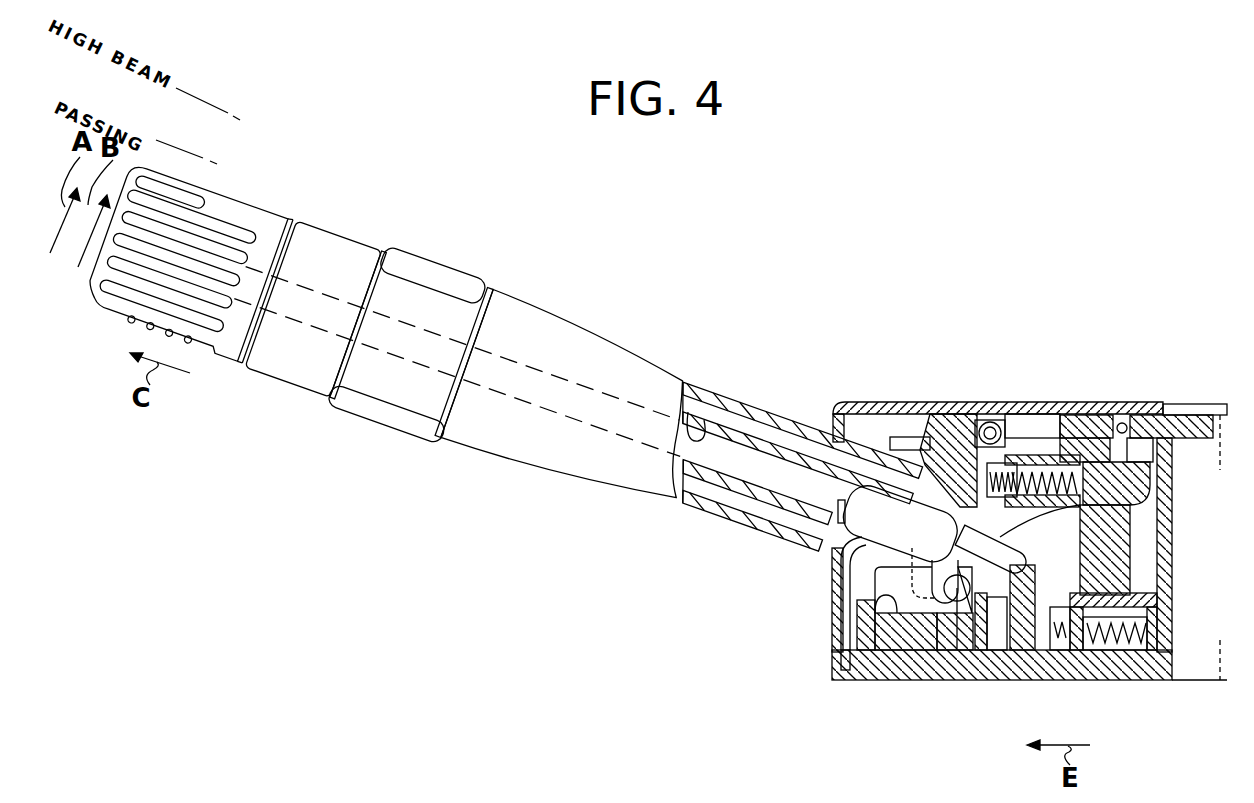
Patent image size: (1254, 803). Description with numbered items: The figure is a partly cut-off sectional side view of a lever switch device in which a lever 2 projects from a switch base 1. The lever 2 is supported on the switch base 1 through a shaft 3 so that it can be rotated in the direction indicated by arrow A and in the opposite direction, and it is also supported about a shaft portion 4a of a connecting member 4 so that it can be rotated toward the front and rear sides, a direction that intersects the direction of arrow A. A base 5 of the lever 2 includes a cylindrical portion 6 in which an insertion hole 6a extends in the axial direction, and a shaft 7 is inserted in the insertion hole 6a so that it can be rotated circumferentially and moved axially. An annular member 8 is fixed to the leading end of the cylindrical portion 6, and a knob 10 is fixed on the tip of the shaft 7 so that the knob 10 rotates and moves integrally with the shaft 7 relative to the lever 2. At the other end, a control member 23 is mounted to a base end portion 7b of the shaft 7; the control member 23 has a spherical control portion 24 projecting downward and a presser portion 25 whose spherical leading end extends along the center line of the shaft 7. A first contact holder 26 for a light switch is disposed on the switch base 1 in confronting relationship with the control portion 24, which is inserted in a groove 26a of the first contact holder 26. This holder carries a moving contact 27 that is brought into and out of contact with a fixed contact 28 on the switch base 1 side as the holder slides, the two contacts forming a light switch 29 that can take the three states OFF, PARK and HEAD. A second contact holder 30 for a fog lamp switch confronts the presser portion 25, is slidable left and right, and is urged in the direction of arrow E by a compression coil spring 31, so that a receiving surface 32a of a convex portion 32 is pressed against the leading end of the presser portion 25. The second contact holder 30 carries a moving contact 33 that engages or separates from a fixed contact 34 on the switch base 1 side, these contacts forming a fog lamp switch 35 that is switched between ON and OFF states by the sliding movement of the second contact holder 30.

The switch base 1 is at (1066, 403).
The lever 2 is at (597, 325).
The shaft 3 is at (928, 462).
The connecting member 4 is at (1035, 408).
The shaft portion 4a is at (947, 402).
The base 5 is at (560, 480).
The cylindrical portion 6 is at (735, 416).
The insertion hole 6a is at (708, 432).
The shaft 7 is at (707, 497).
The base end portion 7b is at (783, 478).
The annular member 8 is at (347, 235).
The knob 10 is at (243, 198).
The control member 23 is at (850, 538).
The control portion 24 is at (967, 650).
The presser portion 25 is at (1158, 496).
The first contact holder 26 is at (878, 578).
The groove 26a is at (880, 602).
The moving contact 27 is at (940, 652).
The fixed contact 28 is at (873, 677).
The light switch 29 is at (835, 666).
The second contact holder 30 is at (1135, 587).
The compression coil spring 31 is at (1135, 597).
The convex portion 32 is at (1050, 592).
The receiving surface 32a is at (1047, 572).
The moving contact 33 is at (1032, 652).
The fixed contact 34 is at (1067, 652).
The fog lamp switch 35 is at (1083, 668).